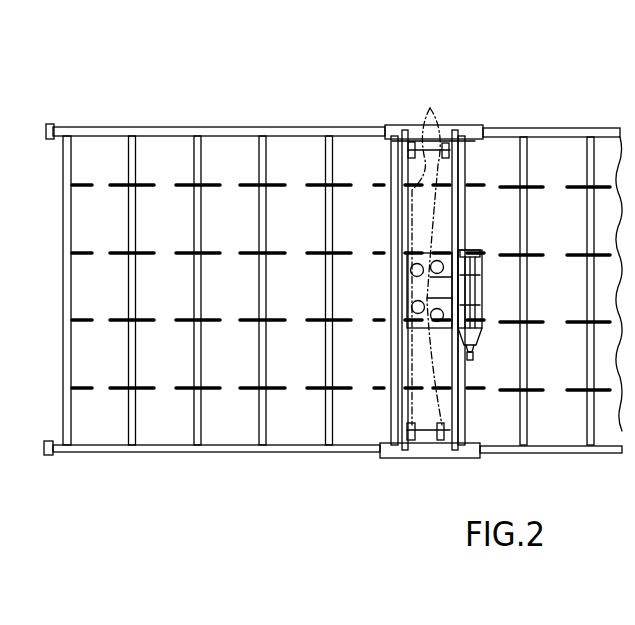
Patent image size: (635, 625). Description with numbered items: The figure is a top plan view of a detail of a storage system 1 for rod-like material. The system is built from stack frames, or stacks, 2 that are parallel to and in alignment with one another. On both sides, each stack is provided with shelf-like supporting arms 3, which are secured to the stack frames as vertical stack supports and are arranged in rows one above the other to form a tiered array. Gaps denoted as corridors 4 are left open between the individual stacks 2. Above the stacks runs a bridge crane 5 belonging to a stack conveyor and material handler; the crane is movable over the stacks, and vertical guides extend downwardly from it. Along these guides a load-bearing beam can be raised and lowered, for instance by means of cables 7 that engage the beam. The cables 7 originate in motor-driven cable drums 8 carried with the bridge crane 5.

The storage system 1 is at (191, 102).
The stack frames 2 is at (63, 298).
The supporting arms 3 is at (278, 185).
The corridors 4 is at (165, 386).
The bridge crane 5 is at (457, 412).
The cables 7 is at (431, 108).
The cable drums 8 is at (478, 273).